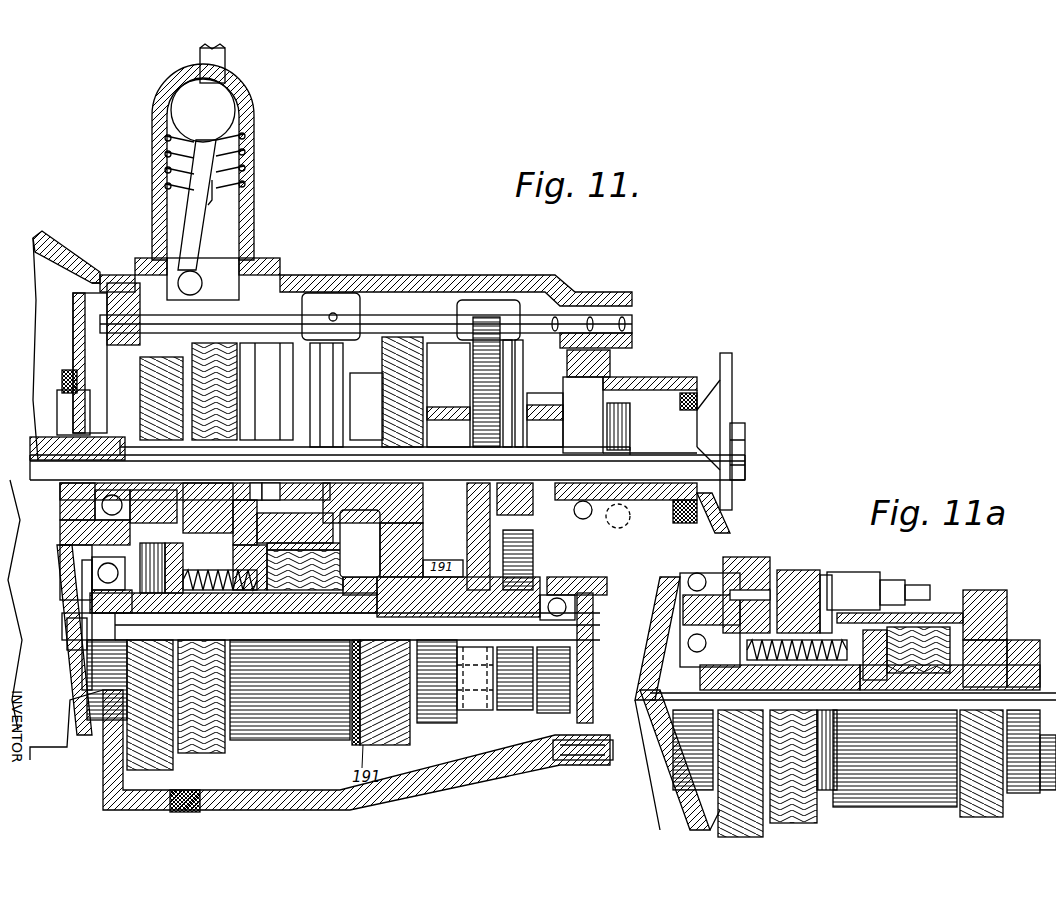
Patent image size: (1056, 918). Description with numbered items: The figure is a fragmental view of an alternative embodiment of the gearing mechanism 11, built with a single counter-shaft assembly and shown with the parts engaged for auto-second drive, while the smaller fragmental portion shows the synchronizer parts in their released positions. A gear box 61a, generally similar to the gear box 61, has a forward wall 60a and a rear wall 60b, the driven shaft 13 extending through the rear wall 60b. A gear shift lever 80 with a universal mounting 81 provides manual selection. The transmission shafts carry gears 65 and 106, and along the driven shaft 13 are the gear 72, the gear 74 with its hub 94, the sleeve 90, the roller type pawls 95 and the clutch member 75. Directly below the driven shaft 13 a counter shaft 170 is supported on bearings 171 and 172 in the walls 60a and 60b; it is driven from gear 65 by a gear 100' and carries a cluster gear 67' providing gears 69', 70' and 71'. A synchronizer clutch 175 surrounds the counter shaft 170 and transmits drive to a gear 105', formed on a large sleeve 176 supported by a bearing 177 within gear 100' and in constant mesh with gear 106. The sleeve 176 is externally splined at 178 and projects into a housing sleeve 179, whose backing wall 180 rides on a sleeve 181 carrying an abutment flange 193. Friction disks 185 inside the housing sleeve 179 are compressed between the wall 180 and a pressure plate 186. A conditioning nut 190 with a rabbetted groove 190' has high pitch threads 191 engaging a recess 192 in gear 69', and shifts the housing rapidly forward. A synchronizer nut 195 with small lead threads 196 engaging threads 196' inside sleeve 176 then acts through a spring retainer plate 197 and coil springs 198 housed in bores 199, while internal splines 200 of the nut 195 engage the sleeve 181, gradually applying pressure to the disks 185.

In FIG. 11, the gearing mechanism 11 is at (383, 276).
In FIG. 11, the driven shaft 13 is at (535, 425).
In FIG. 11, the forward wall 60a is at (62, 548).
In FIG. 11, the rear wall 60b is at (612, 366).
In FIG. 11, the gear box 61 is at (50, 251).
In FIG. 11, the gear box 61a is at (320, 276).
In FIG. 11, the gear 65 is at (157, 352).
In FIG. 11, the cluster gear 67' is at (477, 693).
In FIG. 11, the gear 69' is at (390, 706).
In FIG. 11A, the gear 69' is at (981, 777).
In FIG. 11, the gear 70' is at (438, 697).
In FIG. 11A, the gear 70' is at (1023, 774).
In FIG. 11, the gear 71' is at (516, 693).
In FIG. 11, the gear 72 is at (491, 310).
In FIG. 11, the gear 74 is at (409, 331).
In FIG. 11, the clutch member 75 is at (257, 500).
In FIG. 11, the gear shift lever 80 is at (215, 71).
In FIG. 11, the universal mounting 81 is at (222, 112).
In FIG. 11, the sleeve 90 is at (278, 383).
In FIG. 11, the hub 94 is at (362, 380).
In FIG. 11, the roller type pawls 95 is at (266, 500).
In FIG. 11, the gear 100' is at (115, 713).
In FIG. 11A, the gear 100' is at (758, 782).
In FIG. 11, the gear 105' is at (201, 713).
In FIG. 11A, the gear 105' is at (816, 778).
In FIG. 11, the gear 106 is at (230, 356).
In FIG. 11, the counter shaft 170 is at (110, 622).
In FIG. 11A, the counter shaft 170 is at (1020, 680).
In FIG. 11, the bearing 171 is at (100, 573).
In FIG. 11, the bearing 172 is at (600, 607).
In FIG. 11, the synchronizer clutch 175 is at (309, 748).
In FIG. 11A, the synchronizer clutch 175 is at (895, 758).
In FIG. 11, the sleeve 176 is at (147, 543).
In FIG. 11, the bearing 177 is at (140, 543).
In FIG. 11A, the external splines 178 is at (840, 580).
In FIG. 11, the housing sleeve 179 is at (307, 540).
In FIG. 11A, the housing sleeve 179 is at (928, 613).
In FIG. 11, the backing wall 180 is at (330, 600).
In FIG. 11, the sleeve 181 is at (318, 597).
In FIG. 11A, the sleeve 181 is at (893, 690).
In FIG. 11, the friction disks 185 is at (300, 595).
In FIG. 11, the pressure plate 186 is at (282, 597).
In FIG. 11A, the pressure plate 186 is at (875, 690).
In FIG. 11, the nut 190 is at (418, 550).
In FIG. 11A, the nut 190 is at (1005, 643).
In FIG. 11A, the rabbetted groove 190' is at (992, 601).
In FIG. 11, the threads 191 is at (360, 543).
In FIG. 11, the recess 192 is at (443, 559).
In FIG. 11, the abutment flange 193 is at (340, 600).
In FIG. 11A, the abutment flange 193 is at (970, 675).
In FIG. 11, the synchronizer nut 195 is at (255, 597).
In FIG. 11A, the synchronizer nut 195 is at (813, 570).
In FIG. 11A, the threads 196 is at (685, 620).
In FIG. 11, the threads 196' is at (107, 680).
In FIG. 11, the spring retainer plate 197 is at (262, 600).
In FIG. 11, the coil springs 198 is at (295, 521).
In FIG. 11A, the coil springs 198 is at (828, 590).
In FIG. 11, the bores 199 is at (190, 595).
In FIG. 11A, the bores 199 is at (782, 590).
In FIG. 11, the internal splines 200 is at (220, 595).
In FIG. 11A, the internal splines 200 is at (780, 683).